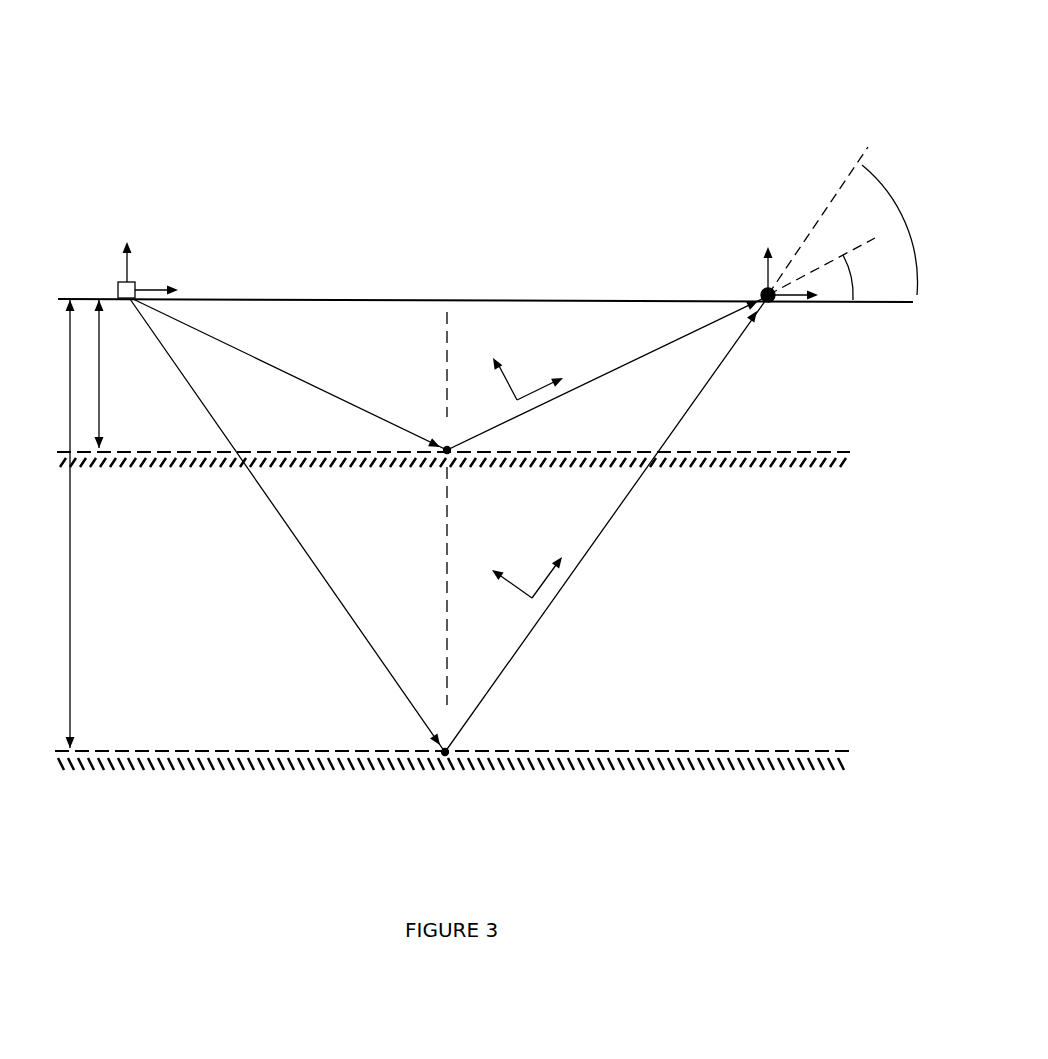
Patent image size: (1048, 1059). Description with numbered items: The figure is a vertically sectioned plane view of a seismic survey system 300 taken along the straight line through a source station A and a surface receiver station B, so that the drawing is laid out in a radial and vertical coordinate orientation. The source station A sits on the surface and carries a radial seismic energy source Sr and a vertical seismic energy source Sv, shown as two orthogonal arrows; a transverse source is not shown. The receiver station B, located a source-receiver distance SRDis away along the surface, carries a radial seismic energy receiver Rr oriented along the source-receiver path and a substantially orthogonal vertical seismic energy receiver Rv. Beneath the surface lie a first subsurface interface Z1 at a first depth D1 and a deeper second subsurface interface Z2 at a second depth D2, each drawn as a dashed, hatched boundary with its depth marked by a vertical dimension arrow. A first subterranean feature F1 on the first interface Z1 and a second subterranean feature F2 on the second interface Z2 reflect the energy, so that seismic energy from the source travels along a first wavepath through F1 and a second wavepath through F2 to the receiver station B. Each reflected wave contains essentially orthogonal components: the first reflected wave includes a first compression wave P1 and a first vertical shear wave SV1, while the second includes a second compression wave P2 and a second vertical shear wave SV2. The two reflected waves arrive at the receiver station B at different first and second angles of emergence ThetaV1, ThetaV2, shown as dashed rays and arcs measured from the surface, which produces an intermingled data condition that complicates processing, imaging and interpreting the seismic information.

The seismic survey system 300 is at (940, 92).
The source station A is at (113, 283).
The surface receiver station B is at (758, 290).
The vertical seismic energy source Sv is at (131, 247).
The radial seismic energy source Sr is at (171, 281).
The vertical seismic energy receiver Rv is at (768, 259).
The radial seismic energy receiver Rr is at (807, 294).
The source-receiver distance SRDis is at (485, 283).
The first depth D1 is at (111, 374).
The second depth D2 is at (84, 524).
The first subsurface interface Z1 is at (453, 445).
The second subsurface interface Z2 is at (452, 746).
The first subterranean feature F1 is at (450, 500).
The second subterranean feature F2 is at (449, 526).
The first compression wave P1 is at (553, 377).
The first vertical shear wave SV1 is at (492, 365).
The second compression wave P2 is at (557, 565).
The second vertical shear wave SV2 is at (498, 569).
The first angle of emergence ThetaV1 is at (824, 269).
The second angle of emergence ThetaV2 is at (853, 221).